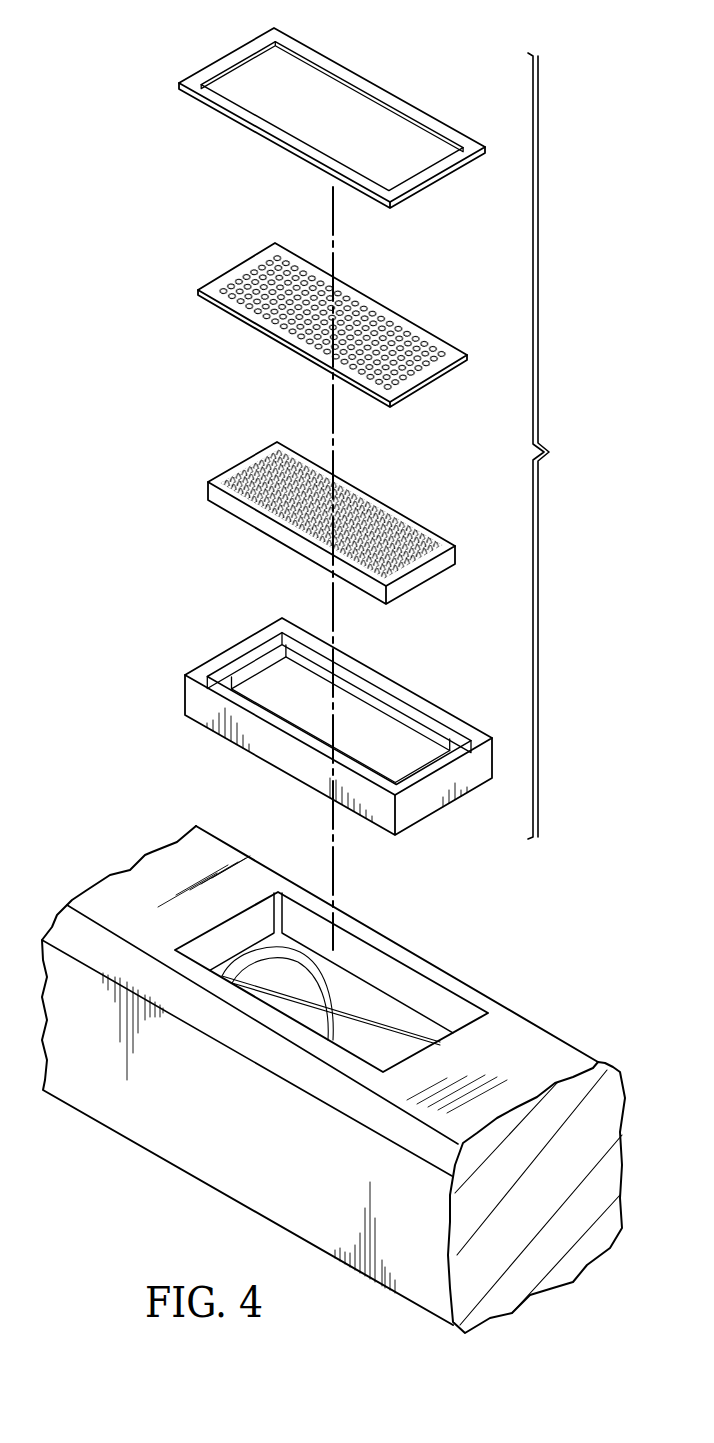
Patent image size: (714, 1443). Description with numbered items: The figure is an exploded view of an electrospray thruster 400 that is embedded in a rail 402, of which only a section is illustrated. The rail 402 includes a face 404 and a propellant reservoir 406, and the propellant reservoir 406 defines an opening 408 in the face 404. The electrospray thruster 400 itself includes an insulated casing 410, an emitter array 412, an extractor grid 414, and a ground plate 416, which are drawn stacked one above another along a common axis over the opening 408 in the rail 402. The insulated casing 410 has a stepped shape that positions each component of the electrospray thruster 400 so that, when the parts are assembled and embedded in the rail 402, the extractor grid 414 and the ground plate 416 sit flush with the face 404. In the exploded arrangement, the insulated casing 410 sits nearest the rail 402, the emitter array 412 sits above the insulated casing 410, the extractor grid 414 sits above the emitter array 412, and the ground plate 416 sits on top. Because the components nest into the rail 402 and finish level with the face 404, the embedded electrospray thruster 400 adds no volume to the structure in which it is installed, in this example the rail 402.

The electrospray thruster 400 is at (560, 446).
The rail 402 is at (167, 1161).
The face 404 is at (528, 1043).
The propellant reservoir 406 is at (382, 965).
The opening 408 is at (450, 1010).
The insulated casing 410 is at (270, 765).
The emitter array 412 is at (208, 483).
The extractor grid 414 is at (238, 263).
The ground plate 416 is at (227, 54).